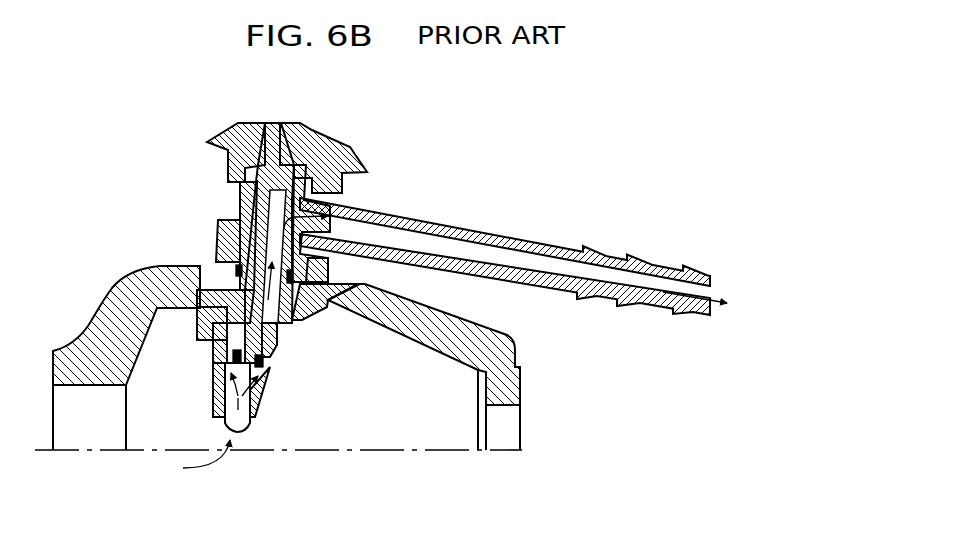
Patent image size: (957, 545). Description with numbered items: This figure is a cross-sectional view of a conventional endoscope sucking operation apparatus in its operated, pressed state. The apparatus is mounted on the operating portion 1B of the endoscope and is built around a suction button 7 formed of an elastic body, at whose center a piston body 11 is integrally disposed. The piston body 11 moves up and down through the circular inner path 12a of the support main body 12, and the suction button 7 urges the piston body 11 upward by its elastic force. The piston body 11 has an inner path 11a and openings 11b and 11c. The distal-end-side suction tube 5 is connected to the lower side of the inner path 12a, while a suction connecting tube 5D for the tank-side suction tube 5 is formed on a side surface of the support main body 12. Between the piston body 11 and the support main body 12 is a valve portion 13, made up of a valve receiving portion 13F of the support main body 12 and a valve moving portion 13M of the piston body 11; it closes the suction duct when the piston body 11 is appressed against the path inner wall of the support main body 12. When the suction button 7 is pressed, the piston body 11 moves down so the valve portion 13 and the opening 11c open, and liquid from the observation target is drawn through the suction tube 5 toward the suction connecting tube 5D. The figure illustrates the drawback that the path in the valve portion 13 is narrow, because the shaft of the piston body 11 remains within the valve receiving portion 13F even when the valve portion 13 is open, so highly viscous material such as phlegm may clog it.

The operating portion 1B is at (100, 288).
The suction tube 5 is at (228, 425).
The suction connecting tube 5D is at (542, 238).
The suction button 7 is at (338, 133).
The piston body 11 is at (232, 180).
The inner path 11a is at (218, 244).
The opening 11b is at (320, 256).
The opening 11c is at (324, 318).
The support main body 12 is at (240, 207).
The inner path 12a is at (217, 330).
The valve portion 13 is at (317, 378).
The valve receiving portion 13F is at (290, 360).
The valve moving portion 13M is at (282, 390).